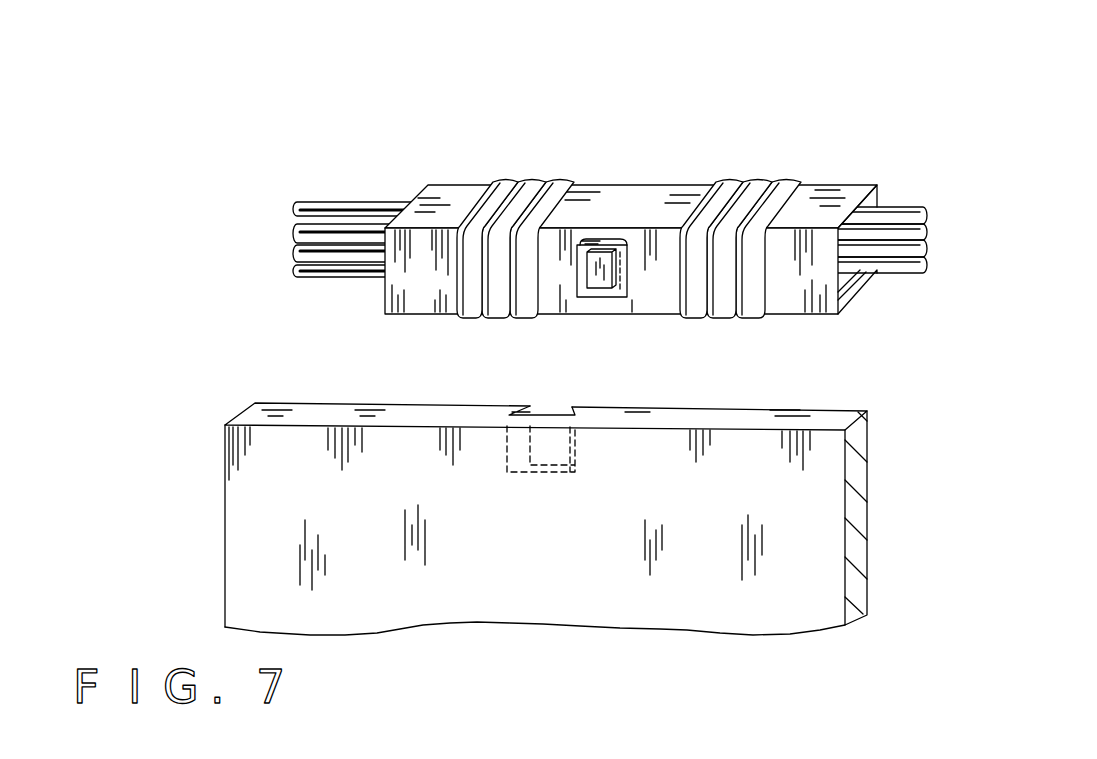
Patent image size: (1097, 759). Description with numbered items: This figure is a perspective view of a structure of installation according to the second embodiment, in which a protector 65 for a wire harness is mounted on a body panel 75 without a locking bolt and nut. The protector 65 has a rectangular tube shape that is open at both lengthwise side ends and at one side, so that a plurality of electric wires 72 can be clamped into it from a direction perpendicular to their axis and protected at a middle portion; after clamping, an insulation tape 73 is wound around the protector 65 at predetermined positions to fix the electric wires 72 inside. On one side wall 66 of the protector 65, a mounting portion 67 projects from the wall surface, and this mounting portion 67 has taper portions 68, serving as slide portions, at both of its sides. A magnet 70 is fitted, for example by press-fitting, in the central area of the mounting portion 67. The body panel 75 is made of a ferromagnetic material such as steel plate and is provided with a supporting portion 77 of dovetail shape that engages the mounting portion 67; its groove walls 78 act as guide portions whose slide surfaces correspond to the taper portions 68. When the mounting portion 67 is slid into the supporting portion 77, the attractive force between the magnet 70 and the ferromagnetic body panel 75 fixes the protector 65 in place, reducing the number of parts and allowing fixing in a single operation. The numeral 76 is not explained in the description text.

The protector 65 is at (612, 183).
The side wall 66 is at (790, 300).
The mounting portion 67 is at (628, 268).
The taper portions 68 is at (585, 237).
The magnet 70 is at (593, 275).
The electric wires 72 is at (345, 270).
The insulation tape 73 is at (505, 185).
The body panel 75 is at (735, 615).
The front surface of block 76 is at (348, 608).
The supporting portion 77 is at (507, 448).
The groove walls 78 is at (571, 411).